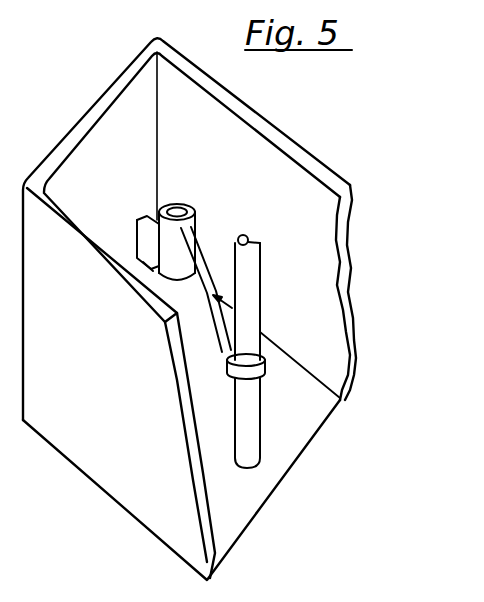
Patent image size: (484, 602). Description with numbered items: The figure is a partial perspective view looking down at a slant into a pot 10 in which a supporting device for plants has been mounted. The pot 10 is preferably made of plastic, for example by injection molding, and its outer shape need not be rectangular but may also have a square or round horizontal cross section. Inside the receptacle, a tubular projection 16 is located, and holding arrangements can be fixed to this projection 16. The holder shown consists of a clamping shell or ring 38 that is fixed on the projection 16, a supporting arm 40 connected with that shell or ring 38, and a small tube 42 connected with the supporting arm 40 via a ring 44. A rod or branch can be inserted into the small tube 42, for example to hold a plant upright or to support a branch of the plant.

The pot 10 is at (353, 199).
The projection 16 is at (150, 283).
The clamping shell or ring 38 is at (192, 228).
The supporting arm 40 is at (121, 383).
The small tube 42 is at (256, 325).
The ring 44 is at (264, 366).